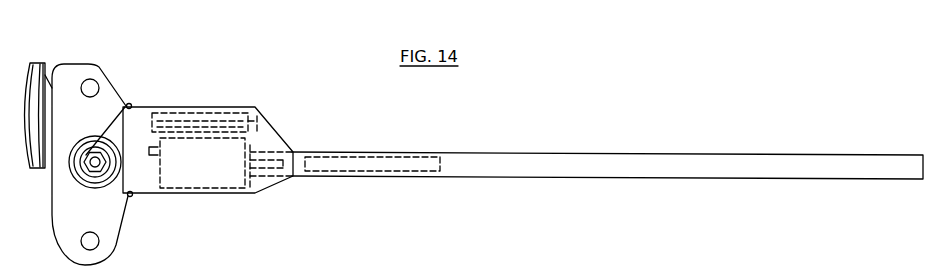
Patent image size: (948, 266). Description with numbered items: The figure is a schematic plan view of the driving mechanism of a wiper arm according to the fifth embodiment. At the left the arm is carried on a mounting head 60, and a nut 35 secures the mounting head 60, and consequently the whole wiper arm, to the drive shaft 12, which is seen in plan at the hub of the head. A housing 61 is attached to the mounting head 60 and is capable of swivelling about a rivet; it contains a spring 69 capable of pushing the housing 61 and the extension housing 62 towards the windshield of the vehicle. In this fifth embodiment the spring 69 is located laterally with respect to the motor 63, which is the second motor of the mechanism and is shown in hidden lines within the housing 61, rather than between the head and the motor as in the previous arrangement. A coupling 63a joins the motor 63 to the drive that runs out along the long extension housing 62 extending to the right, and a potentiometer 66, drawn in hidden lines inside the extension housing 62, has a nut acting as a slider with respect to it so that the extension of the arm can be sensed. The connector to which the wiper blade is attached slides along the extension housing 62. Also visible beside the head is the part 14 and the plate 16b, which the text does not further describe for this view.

The drive shaft 12 is at (97, 167).
The disc 14 is at (30, 62).
The bracket plate 16b is at (107, 72).
The nut 35 is at (84, 162).
The mounting head 60 is at (80, 176).
The housing 61 is at (187, 107).
The extension housing 62 is at (570, 157).
The motor 63 is at (207, 182).
The coupling 63a is at (267, 152).
The potentiometer 66 is at (383, 155).
The spring 69 is at (223, 113).